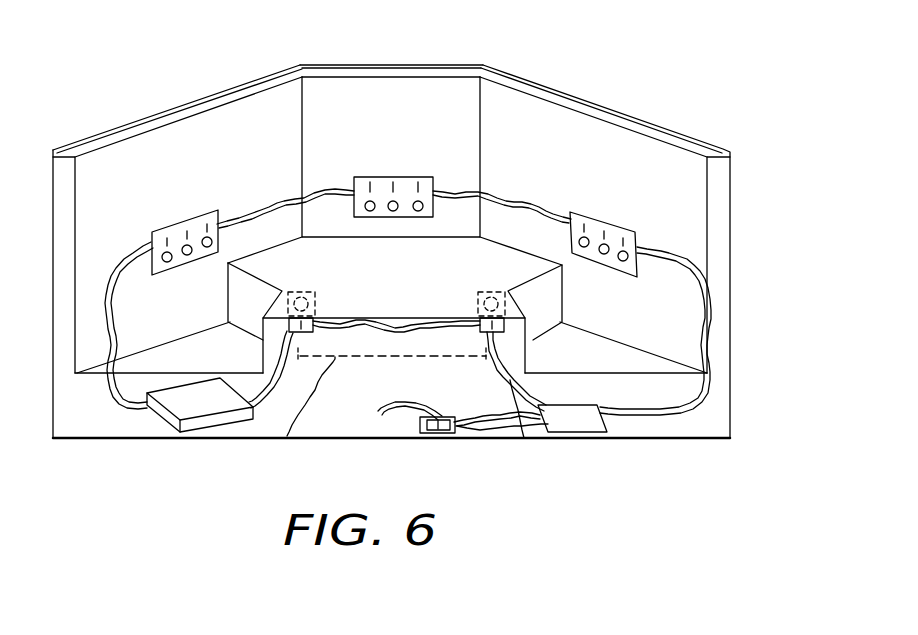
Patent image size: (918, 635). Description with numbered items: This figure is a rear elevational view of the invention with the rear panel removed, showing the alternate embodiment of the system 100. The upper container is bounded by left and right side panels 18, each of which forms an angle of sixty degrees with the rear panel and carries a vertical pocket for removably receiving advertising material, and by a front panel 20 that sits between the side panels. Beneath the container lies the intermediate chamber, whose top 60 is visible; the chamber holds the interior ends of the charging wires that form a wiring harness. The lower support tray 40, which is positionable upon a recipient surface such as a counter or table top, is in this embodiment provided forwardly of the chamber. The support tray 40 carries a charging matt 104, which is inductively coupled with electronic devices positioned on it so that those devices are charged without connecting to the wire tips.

The system 100 is at (708, 117).
The side panel 18 is at (214, 166).
The front panel 20 is at (416, 129).
The top 60 is at (415, 290).
The lower support tray 40 is at (367, 440).
The charging matt 104 is at (281, 400).